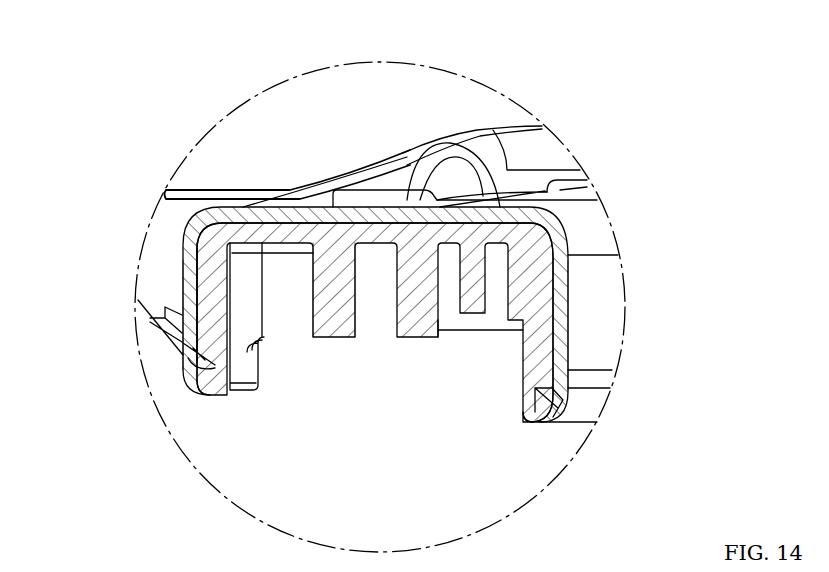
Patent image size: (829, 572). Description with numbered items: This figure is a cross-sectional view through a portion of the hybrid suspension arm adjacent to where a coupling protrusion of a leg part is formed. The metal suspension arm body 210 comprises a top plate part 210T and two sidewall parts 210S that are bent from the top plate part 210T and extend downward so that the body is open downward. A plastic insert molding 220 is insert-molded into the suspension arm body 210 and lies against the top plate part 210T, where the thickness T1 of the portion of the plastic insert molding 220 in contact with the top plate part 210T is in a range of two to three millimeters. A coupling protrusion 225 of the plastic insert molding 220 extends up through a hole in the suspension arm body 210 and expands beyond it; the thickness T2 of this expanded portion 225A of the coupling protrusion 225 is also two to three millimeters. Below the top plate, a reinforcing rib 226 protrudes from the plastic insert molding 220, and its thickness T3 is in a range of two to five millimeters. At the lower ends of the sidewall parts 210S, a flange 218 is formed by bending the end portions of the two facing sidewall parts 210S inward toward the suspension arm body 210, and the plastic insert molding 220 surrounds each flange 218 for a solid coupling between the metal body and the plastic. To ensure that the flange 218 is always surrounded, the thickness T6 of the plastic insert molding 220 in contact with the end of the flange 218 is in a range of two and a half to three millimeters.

The suspension arm body 210 is at (238, 183).
The top plate part 210T is at (377, 203).
The sidewall parts 210S is at (185, 295).
The flange 218 is at (188, 378).
The plastic insert molding 220 is at (261, 400).
The coupling protrusion 225 is at (400, 153).
The expanded portion 225A is at (352, 206).
The reinforcing rib 226 is at (342, 298).
The thickness of the plastic insert molding in contact with the top plate part T1 is at (183, 242).
The thickness of the expanded portion T2 is at (592, 190).
The thickness of the reinforcing rib T3 is at (313, 340).
The thickness of the plastic insert molding in contact with the end of the flange T6 is at (213, 398).